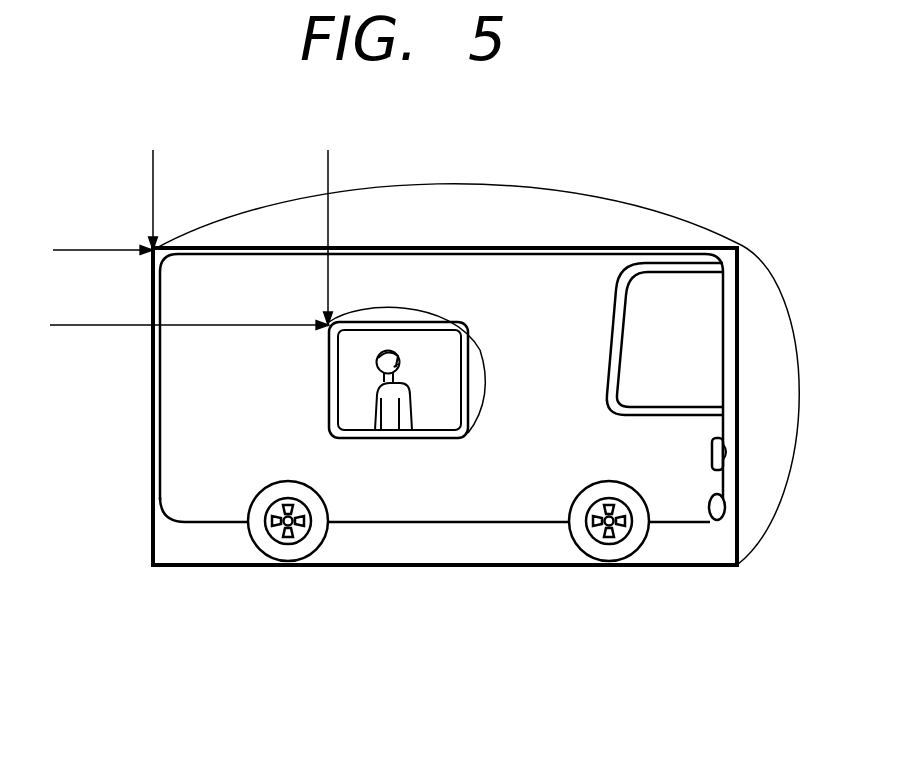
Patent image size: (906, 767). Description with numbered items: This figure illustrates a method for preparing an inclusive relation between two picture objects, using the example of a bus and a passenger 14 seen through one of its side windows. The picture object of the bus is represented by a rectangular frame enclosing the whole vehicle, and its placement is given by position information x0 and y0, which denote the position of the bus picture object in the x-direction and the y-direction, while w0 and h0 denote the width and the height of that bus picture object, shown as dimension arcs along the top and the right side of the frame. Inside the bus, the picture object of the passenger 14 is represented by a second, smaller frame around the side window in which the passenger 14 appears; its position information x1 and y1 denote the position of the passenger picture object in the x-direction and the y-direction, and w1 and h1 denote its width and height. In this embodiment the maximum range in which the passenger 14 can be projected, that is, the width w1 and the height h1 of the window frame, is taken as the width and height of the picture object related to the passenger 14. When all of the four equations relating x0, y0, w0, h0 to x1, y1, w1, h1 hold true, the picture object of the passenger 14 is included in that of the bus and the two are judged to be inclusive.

The passenger 14 is at (376, 358).
The position information of the bus picture object in the x-direction x0 is at (103, 238).
The position information of the bus picture object in the y-direction y0 is at (171, 200).
The width of the bus picture object w0 is at (445, 210).
The height of the bus picture object h0 is at (775, 404).
The position information of the passenger picture object in the x-direction x1 is at (189, 312).
The position information of the passenger picture object in the y-direction y1 is at (315, 237).
The width of the passenger picture object w1 is at (404, 358).
The height of the passenger picture object h1 is at (496, 391).